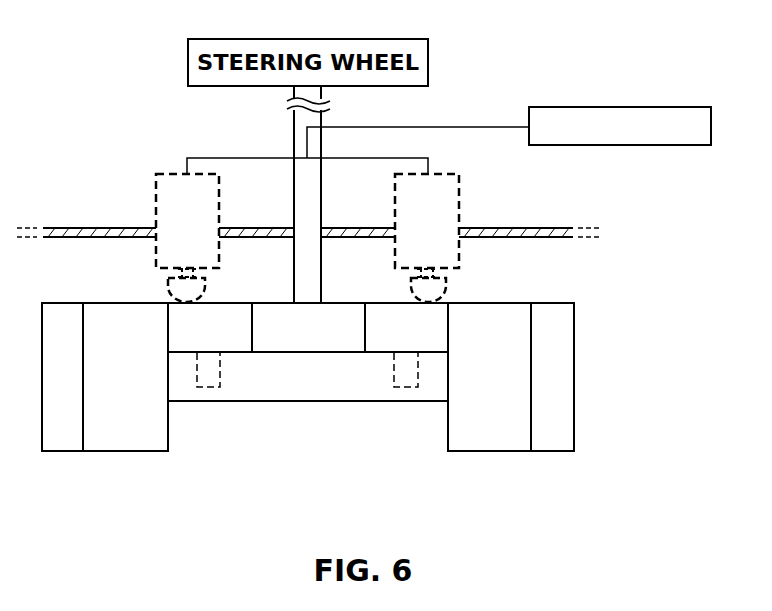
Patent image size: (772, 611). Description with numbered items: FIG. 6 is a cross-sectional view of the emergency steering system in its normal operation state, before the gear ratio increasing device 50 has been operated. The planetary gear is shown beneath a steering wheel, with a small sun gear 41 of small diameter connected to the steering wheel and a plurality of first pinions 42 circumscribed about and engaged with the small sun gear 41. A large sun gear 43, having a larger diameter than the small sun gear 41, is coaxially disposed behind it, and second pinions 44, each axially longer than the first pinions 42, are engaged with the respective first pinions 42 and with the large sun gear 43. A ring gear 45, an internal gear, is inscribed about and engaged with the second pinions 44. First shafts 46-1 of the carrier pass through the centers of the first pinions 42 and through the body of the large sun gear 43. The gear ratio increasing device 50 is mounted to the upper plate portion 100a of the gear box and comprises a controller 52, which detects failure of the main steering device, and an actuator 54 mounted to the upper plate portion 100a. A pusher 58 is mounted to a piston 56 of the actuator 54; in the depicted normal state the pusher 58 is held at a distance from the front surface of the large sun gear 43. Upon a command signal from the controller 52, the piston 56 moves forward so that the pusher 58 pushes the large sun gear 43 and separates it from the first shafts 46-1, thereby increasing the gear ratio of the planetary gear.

The gear ratio increasing device 50 is at (519, 52).
The controller 52 is at (556, 107).
The actuator 54 is at (461, 187).
The upper plate portion 100a is at (549, 230).
The piston 56 is at (434, 312).
The pusher 58 is at (444, 333).
The small sun gear 41 is at (308, 338).
The first pinions 42 is at (235, 338).
The large sun gear 43 is at (428, 401).
The second pinions 44 is at (130, 451).
The ring gear 45 is at (63, 451).
The first shafts 46-1 is at (210, 387).